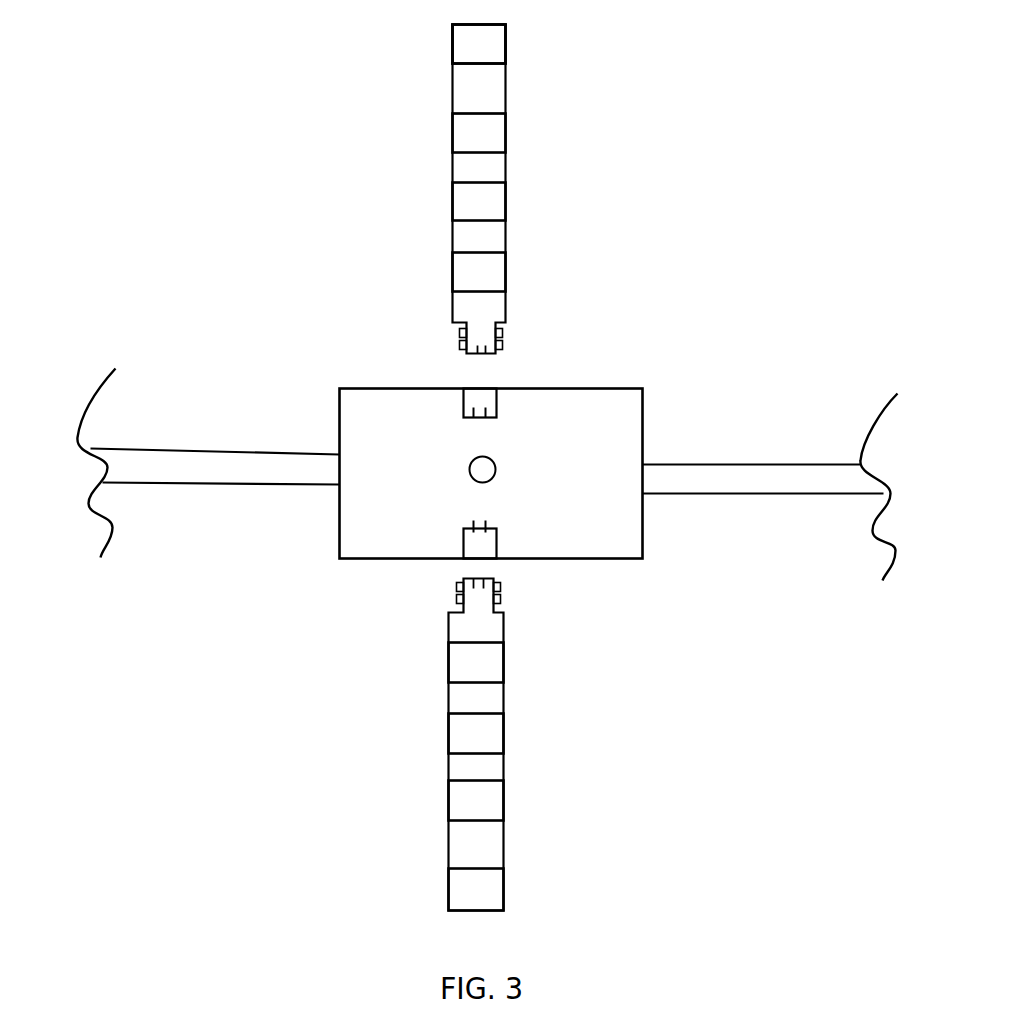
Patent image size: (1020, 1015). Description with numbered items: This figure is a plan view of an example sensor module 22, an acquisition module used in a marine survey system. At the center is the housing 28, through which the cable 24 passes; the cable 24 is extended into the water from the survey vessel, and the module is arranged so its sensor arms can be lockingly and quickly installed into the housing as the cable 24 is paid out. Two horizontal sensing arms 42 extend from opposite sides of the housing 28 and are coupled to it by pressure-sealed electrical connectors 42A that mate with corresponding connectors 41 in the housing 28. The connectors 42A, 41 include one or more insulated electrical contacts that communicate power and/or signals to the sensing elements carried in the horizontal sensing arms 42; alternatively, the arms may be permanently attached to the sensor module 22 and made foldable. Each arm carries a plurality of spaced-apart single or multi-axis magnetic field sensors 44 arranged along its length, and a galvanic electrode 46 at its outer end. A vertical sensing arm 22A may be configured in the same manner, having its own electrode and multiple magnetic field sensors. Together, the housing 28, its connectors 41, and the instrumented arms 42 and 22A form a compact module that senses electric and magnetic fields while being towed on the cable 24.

The sensor module 22 is at (680, 331).
The vertical sensing arm 22A is at (495, 467).
The cable 24 is at (252, 481).
The housing 28 is at (596, 399).
The connectors 41 is at (463, 408).
The horizontal sensing arms 42 is at (478, 468).
The pressure-sealed electrical connectors 42A is at (504, 340).
The magnetic field sensors 44 is at (495, 133).
The galvanic electrode 46 is at (493, 47).